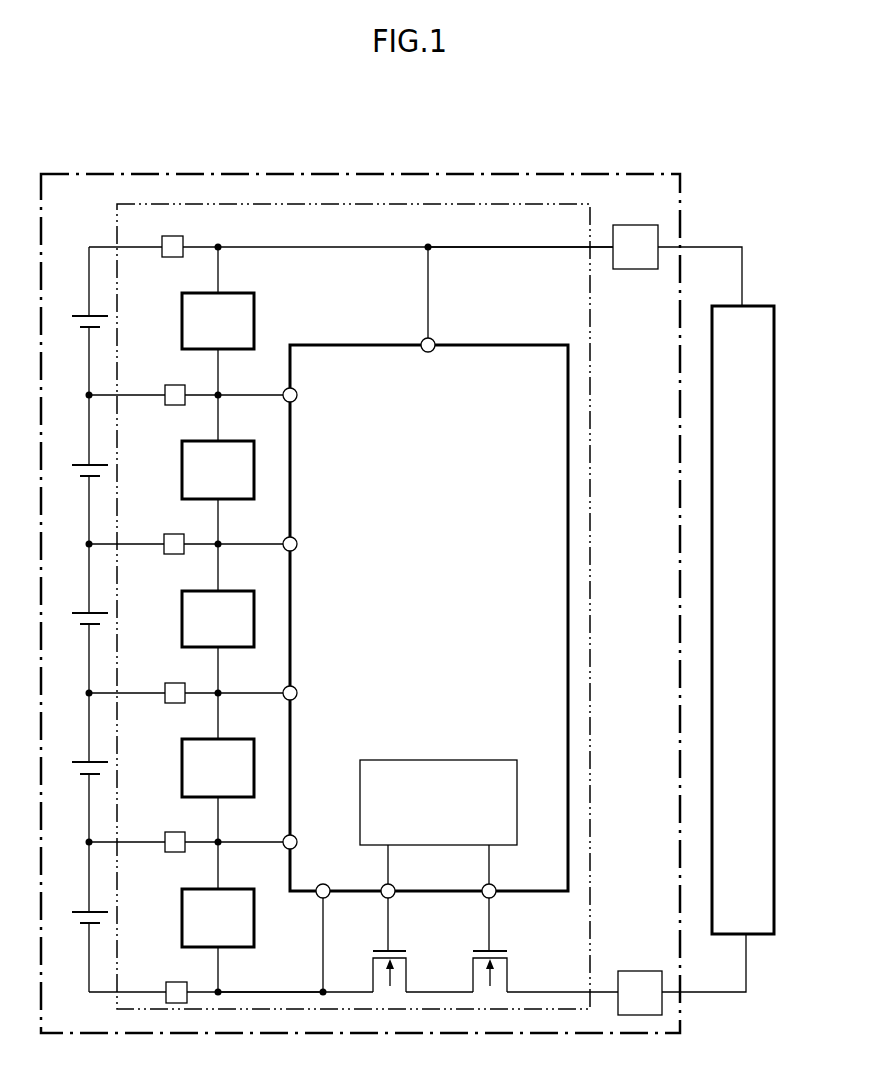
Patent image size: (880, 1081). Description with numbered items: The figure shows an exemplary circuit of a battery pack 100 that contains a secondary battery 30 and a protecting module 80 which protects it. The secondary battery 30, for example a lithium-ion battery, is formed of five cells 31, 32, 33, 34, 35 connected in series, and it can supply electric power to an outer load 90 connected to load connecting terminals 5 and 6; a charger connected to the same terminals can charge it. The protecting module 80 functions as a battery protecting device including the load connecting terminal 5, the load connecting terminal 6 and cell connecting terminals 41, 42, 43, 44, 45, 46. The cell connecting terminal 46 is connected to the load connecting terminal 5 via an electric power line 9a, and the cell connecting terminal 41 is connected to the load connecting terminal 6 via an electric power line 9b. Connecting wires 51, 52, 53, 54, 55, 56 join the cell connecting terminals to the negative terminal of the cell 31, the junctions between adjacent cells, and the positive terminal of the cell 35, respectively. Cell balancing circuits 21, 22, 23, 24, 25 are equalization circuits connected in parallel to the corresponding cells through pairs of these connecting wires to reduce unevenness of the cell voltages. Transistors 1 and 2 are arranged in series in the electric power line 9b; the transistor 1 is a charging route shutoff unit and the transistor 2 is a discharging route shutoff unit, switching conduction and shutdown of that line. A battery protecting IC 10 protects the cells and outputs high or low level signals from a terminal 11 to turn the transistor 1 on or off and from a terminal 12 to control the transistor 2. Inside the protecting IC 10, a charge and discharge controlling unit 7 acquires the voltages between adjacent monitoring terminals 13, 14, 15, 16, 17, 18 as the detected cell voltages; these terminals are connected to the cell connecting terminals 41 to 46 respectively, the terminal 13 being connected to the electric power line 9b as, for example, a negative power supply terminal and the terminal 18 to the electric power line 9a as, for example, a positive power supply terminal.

The transistor 1 is at (505, 951).
The transistor 2 is at (403, 951).
The load connecting terminal 5 is at (626, 225).
The load connecting terminal 6 is at (633, 971).
The charge and discharge controlling unit 7 is at (468, 760).
The electric power line 9a is at (498, 247).
The electric power line 9b is at (269, 992).
The battery protecting IC 10 is at (528, 345).
The terminal 11 is at (495, 900).
The terminal 12 is at (394, 900).
The terminal 13 is at (328, 900).
The terminal 14 is at (285, 850).
The terminal 15 is at (285, 701).
The terminal 16 is at (285, 552).
The terminal 17 is at (285, 403).
The terminal 18 is at (432, 339).
The cell balancing circuit 21 is at (220, 889).
The cell balancing circuit 22 is at (220, 739).
The cell balancing circuit 23 is at (220, 591).
The cell balancing circuit 24 is at (220, 442).
The cell balancing circuit 25 is at (220, 293).
The secondary battery 30 is at (69, 268).
The cell 31 is at (85, 911).
The cell 32 is at (85, 762).
The cell 33 is at (85, 612).
The cell 34 is at (85, 464).
The cell 35 is at (85, 315).
The cell connecting terminal 41 is at (185, 983).
The cell connecting terminal 42 is at (183, 835).
The cell connecting terminal 43 is at (183, 685).
The cell connecting terminal 44 is at (183, 535).
The cell connecting terminal 45 is at (183, 387).
The cell connecting terminal 46 is at (183, 237).
The connecting wire 51 is at (128, 992).
The connecting wire 52 is at (128, 842).
The connecting wire 53 is at (128, 693).
The connecting wire 54 is at (128, 544).
The connecting wire 55 is at (128, 395).
The connecting wire 56 is at (128, 246).
The protecting module 80 is at (470, 204).
The outer load 90 is at (744, 306).
The battery pack 100 is at (546, 174).